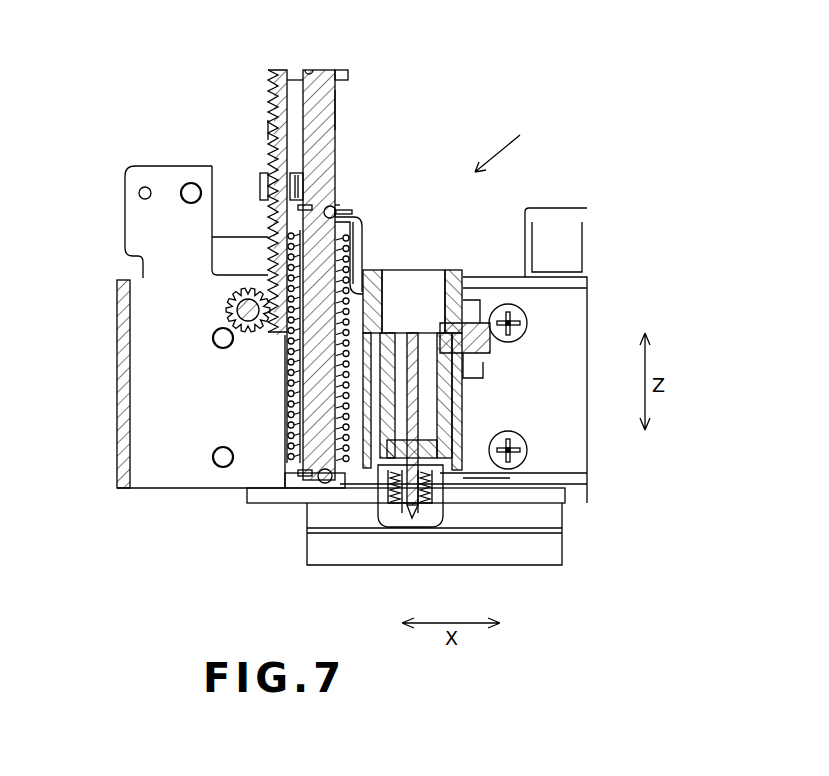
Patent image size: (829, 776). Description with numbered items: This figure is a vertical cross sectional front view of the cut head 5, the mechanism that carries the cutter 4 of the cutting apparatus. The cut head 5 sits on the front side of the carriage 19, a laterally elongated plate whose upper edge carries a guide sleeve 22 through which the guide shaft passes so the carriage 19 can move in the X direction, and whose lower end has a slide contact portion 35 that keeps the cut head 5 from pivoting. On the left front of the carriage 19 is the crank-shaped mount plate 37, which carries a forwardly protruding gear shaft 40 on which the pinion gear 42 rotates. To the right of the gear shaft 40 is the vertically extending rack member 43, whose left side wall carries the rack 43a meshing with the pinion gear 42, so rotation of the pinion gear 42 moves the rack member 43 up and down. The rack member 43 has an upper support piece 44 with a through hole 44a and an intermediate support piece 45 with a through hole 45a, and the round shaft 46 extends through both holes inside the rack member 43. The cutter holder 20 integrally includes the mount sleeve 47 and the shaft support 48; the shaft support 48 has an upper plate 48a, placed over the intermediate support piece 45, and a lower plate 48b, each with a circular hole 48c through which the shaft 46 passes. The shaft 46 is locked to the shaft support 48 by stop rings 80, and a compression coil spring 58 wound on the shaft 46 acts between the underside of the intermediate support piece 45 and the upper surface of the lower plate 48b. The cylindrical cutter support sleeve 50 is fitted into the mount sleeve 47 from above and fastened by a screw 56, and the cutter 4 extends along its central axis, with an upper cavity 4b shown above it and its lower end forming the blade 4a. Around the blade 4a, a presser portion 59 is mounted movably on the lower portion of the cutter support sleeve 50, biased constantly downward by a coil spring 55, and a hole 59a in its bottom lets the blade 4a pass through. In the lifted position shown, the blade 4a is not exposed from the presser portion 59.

The cutter 4 is at (440, 418).
The blade 4a is at (443, 515).
The shaft upper cavity 4b is at (400, 340).
The cut head 5 is at (509, 140).
The carriage 19 is at (587, 318).
The cutter holder 20 is at (510, 478).
The guide sleeve 22 is at (567, 210).
The slide contact portion 35 is at (540, 565).
The mount plate 37 is at (117, 366).
The gear shaft 40 is at (248, 335).
The pinion gear 42 is at (224, 310).
The rack member 43 is at (270, 70).
The rack 43a is at (268, 130).
The upper support piece 44 is at (342, 70).
The through hole 44a is at (312, 68).
The intermediate support piece 45 is at (355, 228).
The through hole 45a is at (340, 205).
The shaft 46 is at (336, 110).
The mount sleeve 47 is at (463, 392).
The shaft support 48 is at (362, 220).
The upper plate 48a is at (300, 220).
The lower plate 48b is at (338, 488).
The circular hole 48c is at (300, 192).
The cutter support sleeve 50 is at (455, 270).
The coil spring 55 is at (393, 502).
The screw 56 is at (510, 342).
The compression coil spring 58 is at (290, 400).
The presser portion 59 is at (560, 495).
The hole 59a is at (410, 527).
The stop rings 80 is at (348, 210).